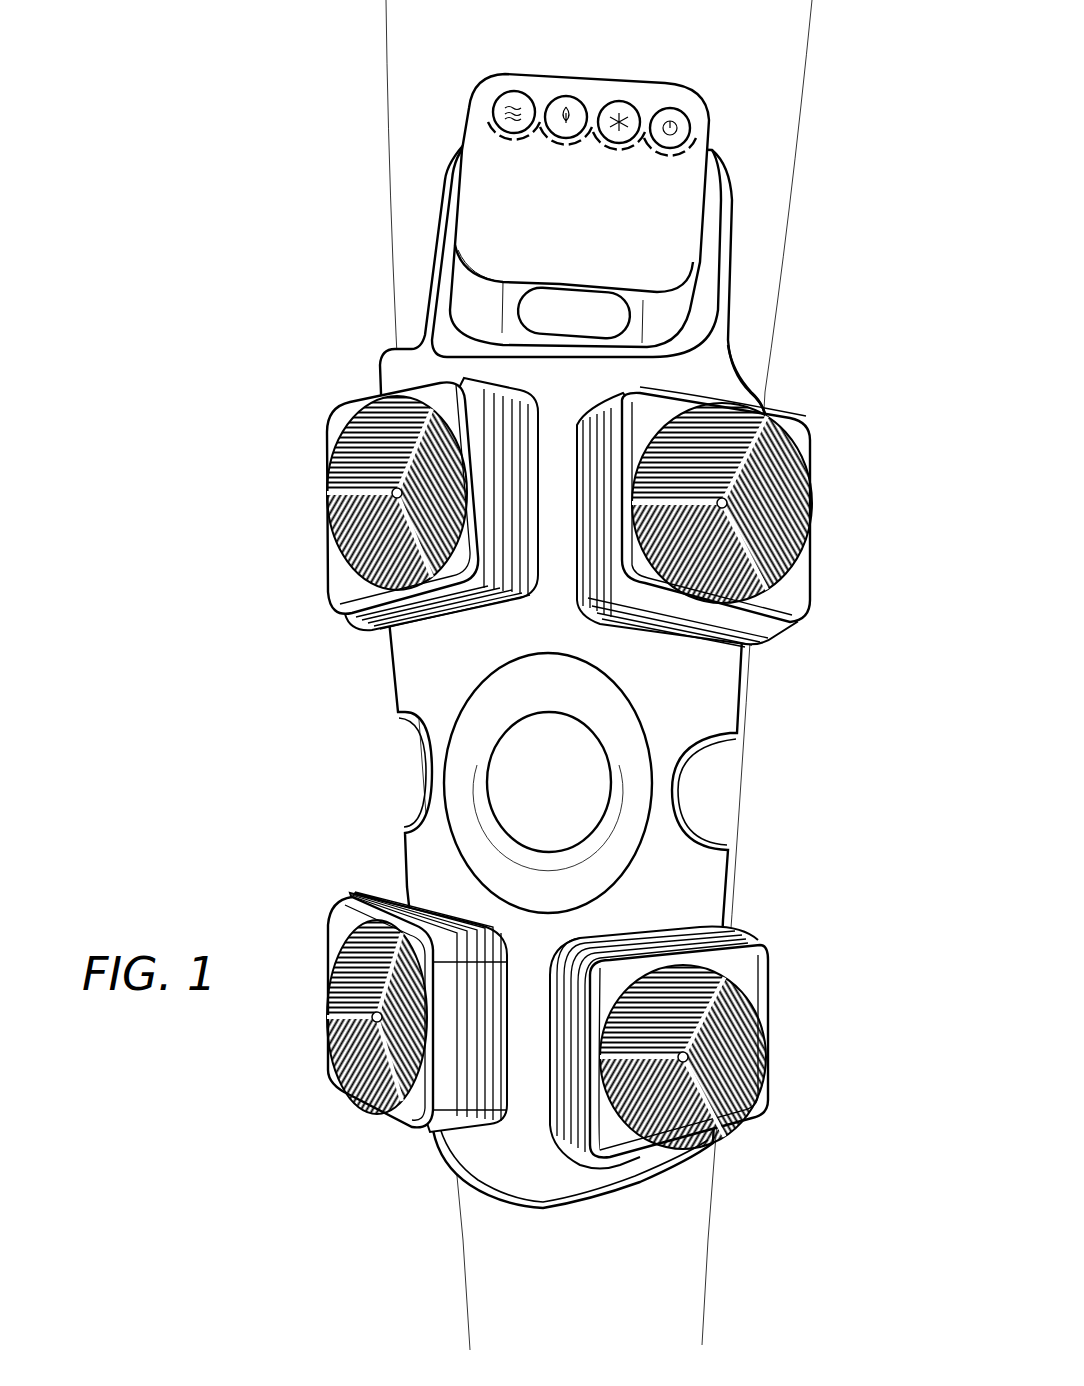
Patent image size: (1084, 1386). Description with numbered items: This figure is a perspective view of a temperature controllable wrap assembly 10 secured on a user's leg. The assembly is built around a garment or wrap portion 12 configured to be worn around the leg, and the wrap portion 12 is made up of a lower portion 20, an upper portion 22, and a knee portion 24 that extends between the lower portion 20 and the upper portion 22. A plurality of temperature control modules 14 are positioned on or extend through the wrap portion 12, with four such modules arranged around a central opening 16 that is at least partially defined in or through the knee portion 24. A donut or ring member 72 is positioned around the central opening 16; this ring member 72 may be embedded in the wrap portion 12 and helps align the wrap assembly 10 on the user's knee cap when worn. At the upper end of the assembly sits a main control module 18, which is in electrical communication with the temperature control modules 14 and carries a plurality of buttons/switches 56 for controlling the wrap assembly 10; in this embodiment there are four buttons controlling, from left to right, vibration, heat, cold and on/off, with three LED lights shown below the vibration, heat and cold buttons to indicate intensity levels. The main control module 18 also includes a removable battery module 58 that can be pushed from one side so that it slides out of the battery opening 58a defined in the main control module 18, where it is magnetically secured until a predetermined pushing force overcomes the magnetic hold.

The temperature controllable wrap assembly 10 is at (862, 258).
The wrap portion 12 is at (720, 690).
The temperature control modules 14 is at (345, 430).
The central opening 16 is at (547, 783).
The main control module 18 is at (488, 192).
The lower portion 20 is at (503, 1170).
The upper portion 22 is at (735, 398).
The knee portion 24 is at (657, 773).
The buttons/switches 56 is at (667, 118).
The battery module 58 is at (540, 310).
The battery opening 58a is at (522, 287).
The ring member 72 is at (458, 795).